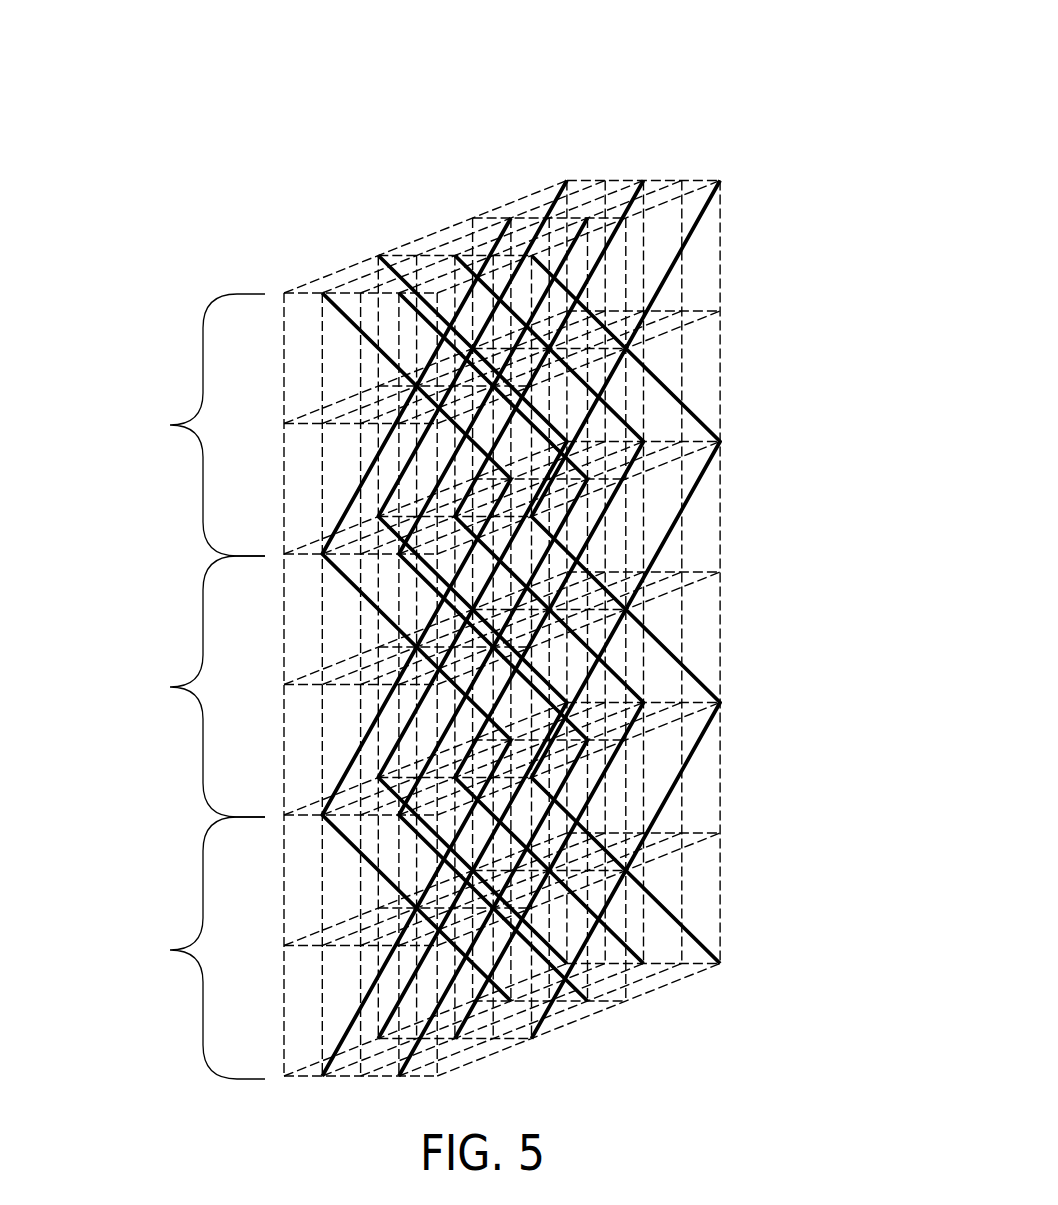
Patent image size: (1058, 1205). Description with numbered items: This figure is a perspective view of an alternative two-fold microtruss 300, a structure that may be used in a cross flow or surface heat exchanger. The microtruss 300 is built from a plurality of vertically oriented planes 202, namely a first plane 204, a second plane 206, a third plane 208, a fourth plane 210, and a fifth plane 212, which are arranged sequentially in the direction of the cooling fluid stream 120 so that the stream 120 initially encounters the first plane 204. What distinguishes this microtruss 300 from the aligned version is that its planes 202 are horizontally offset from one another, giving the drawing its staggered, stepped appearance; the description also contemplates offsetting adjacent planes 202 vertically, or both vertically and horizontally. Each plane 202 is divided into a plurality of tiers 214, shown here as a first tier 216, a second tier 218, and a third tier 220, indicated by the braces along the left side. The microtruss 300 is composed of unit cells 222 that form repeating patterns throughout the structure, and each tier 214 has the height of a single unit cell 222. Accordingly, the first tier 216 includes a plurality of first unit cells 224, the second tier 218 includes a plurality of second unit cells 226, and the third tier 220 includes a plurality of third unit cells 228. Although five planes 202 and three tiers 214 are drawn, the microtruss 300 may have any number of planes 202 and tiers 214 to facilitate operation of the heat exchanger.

The cooling fluid stream 120 is at (837, 457).
The plane 202 is at (702, 93).
The first plane 204 is at (720, 180).
The second plane 206 is at (682, 180).
The third plane 208 is at (643, 180).
The fourth plane 210 is at (606, 180).
The fifth plane 212 is at (567, 180).
The tier 214 is at (387, 686).
The first tier 216 is at (171, 950).
The second tier 218 is at (171, 687).
The third tier 220 is at (171, 425).
The unit cell 222 is at (187, 555).
The first unit cell 224 is at (267, 944).
The second unit cell 226 is at (268, 684).
The third unit cell 228 is at (265, 422).
The microtruss 300 is at (248, 246).